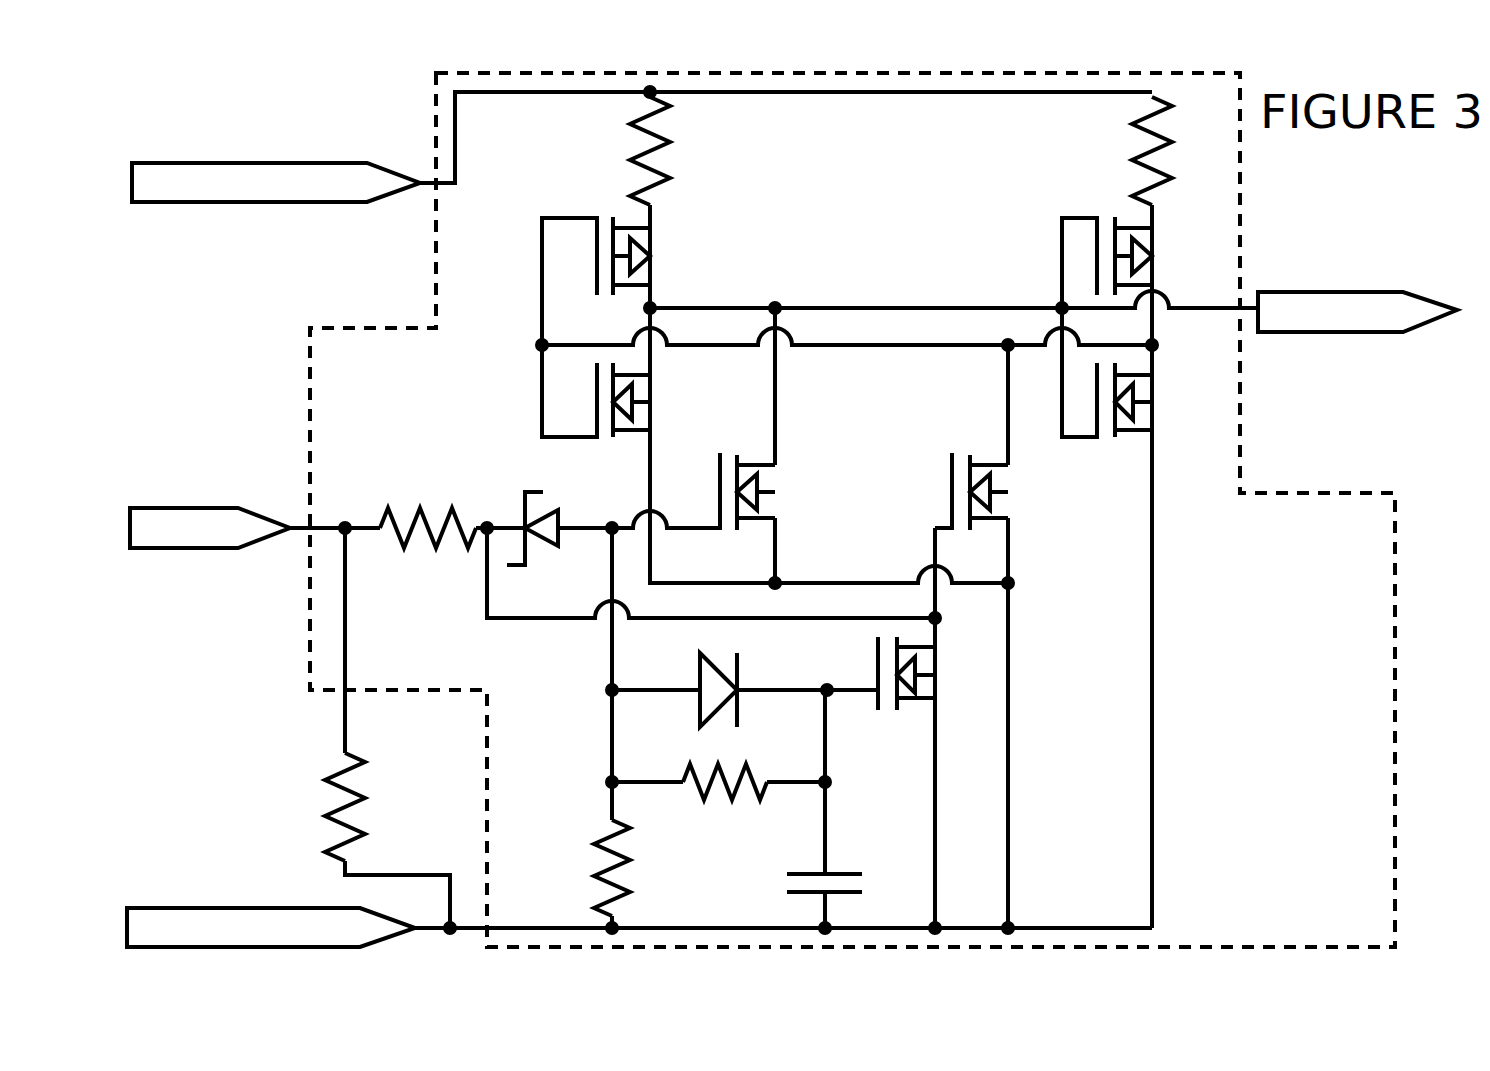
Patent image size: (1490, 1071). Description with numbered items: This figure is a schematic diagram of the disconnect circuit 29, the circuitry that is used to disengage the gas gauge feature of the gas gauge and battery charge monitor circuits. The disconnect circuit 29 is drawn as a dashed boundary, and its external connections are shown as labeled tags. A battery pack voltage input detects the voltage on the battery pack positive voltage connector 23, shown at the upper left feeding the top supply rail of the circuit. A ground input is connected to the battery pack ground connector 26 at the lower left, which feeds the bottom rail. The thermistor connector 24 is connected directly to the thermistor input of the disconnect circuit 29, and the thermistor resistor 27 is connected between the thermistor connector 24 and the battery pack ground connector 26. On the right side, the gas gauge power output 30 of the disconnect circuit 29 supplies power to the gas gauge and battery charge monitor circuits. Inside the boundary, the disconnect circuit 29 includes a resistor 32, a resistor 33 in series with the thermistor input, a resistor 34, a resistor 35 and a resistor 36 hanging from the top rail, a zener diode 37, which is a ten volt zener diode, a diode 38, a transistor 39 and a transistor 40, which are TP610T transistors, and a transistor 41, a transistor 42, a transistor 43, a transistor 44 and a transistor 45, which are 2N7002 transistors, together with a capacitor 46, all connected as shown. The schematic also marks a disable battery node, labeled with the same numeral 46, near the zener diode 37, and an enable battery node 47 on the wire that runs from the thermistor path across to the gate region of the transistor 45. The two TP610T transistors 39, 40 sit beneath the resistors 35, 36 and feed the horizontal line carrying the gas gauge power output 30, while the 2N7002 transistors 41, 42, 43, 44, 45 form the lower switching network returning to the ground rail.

The battery pack positive voltage connector 23 is at (225, 202).
The thermistor connector 24 is at (225, 548).
The battery pack ground connector 26 is at (202, 905).
The thermistor resistor 27 is at (367, 800).
The disconnect circuit 29 is at (310, 405).
The gas gauge power output 30 is at (1387, 333).
The resistor 32 is at (630, 855).
The resistor 33 is at (440, 548).
The resistor 34 is at (740, 803).
The resistor 35 is at (686, 148).
The resistor 36 is at (1188, 148).
The zener diode 37 is at (563, 502).
The diode 38 is at (755, 662).
The transistor 39 is at (660, 255).
The transistor 40 is at (1162, 255).
The transistor 41 is at (657, 400).
The transistor 42 is at (1163, 400).
The transistor 43 is at (786, 478).
The transistor 44 is at (1020, 490).
The transistor 45 is at (950, 677).
The capacitor 46 is at (870, 880).
The enable battery node 47 is at (850, 622).